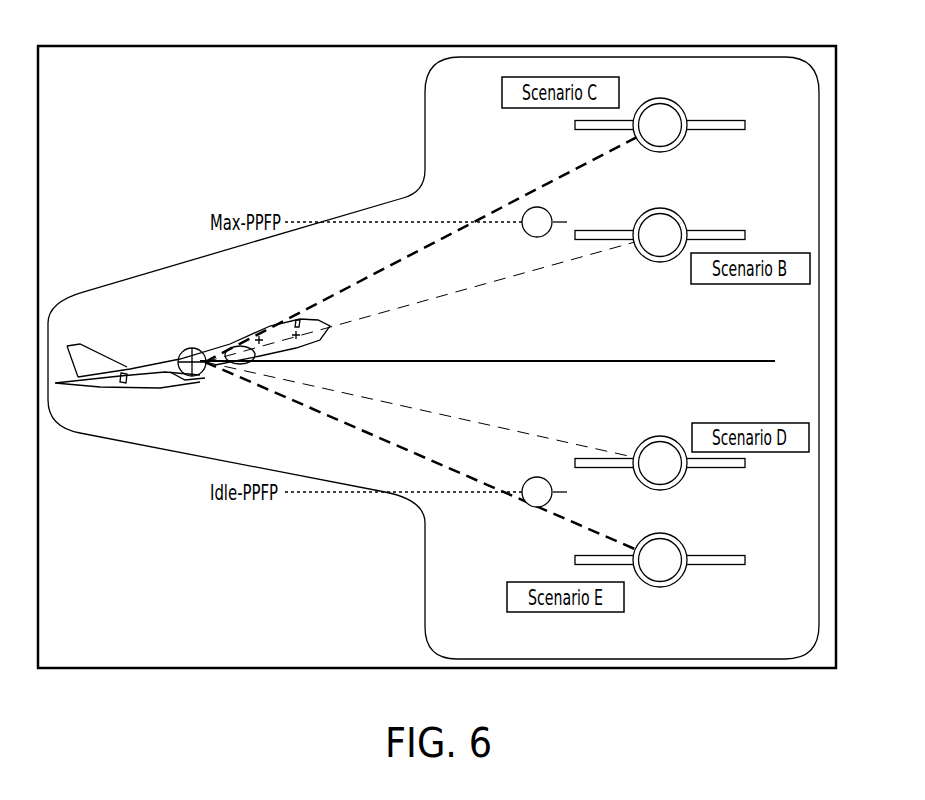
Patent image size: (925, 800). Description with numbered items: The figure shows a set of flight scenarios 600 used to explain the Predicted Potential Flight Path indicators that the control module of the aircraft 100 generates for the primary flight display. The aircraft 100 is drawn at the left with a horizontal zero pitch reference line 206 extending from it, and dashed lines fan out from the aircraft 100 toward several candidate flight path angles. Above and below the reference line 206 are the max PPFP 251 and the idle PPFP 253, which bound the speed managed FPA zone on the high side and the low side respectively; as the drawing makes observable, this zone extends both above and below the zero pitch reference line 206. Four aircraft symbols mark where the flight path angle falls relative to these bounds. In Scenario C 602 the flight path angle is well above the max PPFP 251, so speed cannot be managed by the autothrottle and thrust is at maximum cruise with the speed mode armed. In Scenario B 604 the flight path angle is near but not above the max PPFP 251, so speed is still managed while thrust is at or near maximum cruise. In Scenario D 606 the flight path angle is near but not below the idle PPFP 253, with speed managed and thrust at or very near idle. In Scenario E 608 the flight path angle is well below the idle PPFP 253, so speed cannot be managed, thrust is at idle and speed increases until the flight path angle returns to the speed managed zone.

The flight scenarios diagram 600 is at (413, 46).
The Scenario C 602 is at (708, 95).
The Scenario B 604 is at (710, 200).
The Scenario D 606 is at (685, 478).
The Scenario E 608 is at (683, 578).
The max PPFP indicator 251 is at (535, 207).
The idle PPFP indicator 253 is at (542, 510).
The zero pitch reference line 206 is at (658, 360).
The aircraft 100 is at (175, 385).